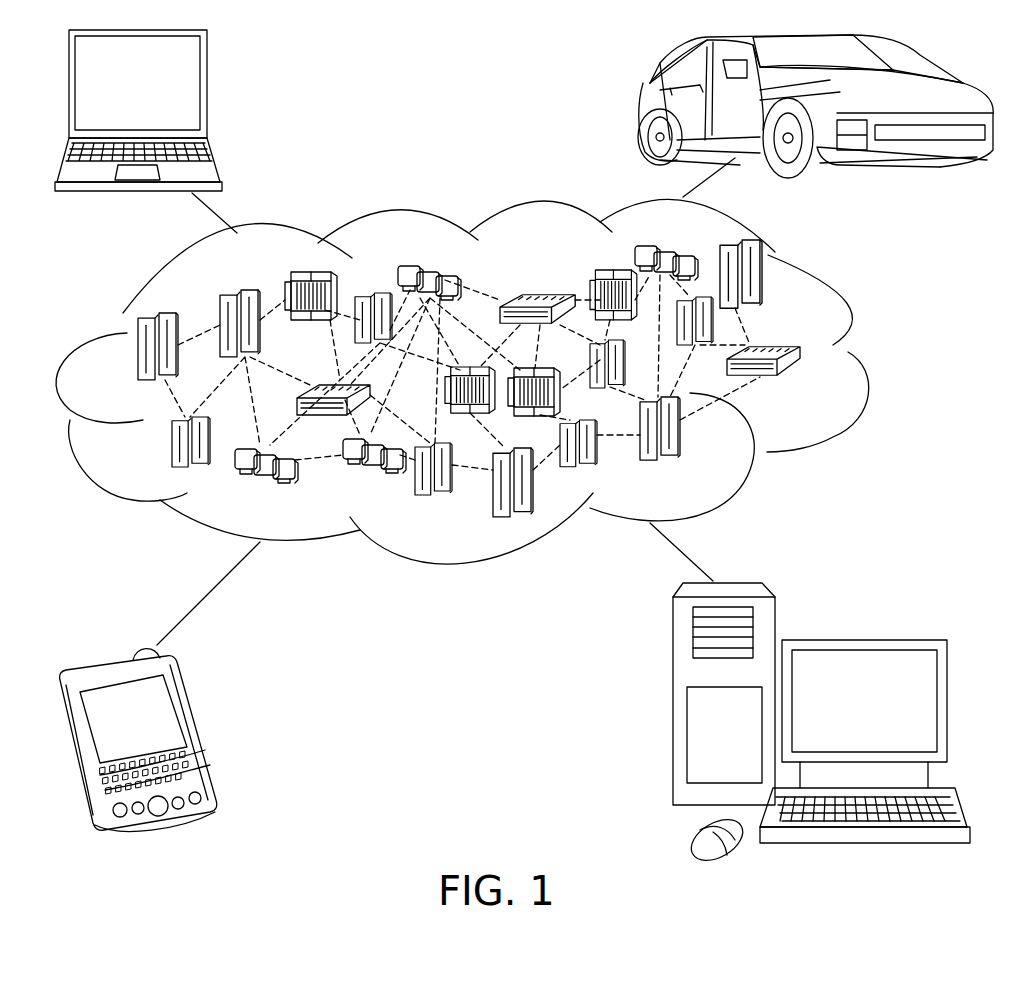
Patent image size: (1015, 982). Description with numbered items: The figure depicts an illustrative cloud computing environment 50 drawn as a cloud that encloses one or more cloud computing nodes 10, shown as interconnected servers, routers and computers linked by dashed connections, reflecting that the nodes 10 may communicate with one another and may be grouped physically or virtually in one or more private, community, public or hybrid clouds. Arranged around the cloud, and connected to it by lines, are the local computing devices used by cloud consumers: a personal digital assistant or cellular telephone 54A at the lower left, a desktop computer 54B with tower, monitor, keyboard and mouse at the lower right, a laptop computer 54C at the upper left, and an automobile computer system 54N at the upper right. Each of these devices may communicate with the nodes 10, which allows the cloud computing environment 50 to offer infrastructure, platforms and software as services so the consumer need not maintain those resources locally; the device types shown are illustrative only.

The cloud computing nodes 10 is at (808, 389).
The cloud computing environment 50 is at (858, 355).
The personal digital assistant or cellular telephone 54A is at (197, 728).
The desktop computer 54B is at (863, 640).
The laptop computer 54C is at (207, 88).
The automobile computer system 54N is at (642, 106).